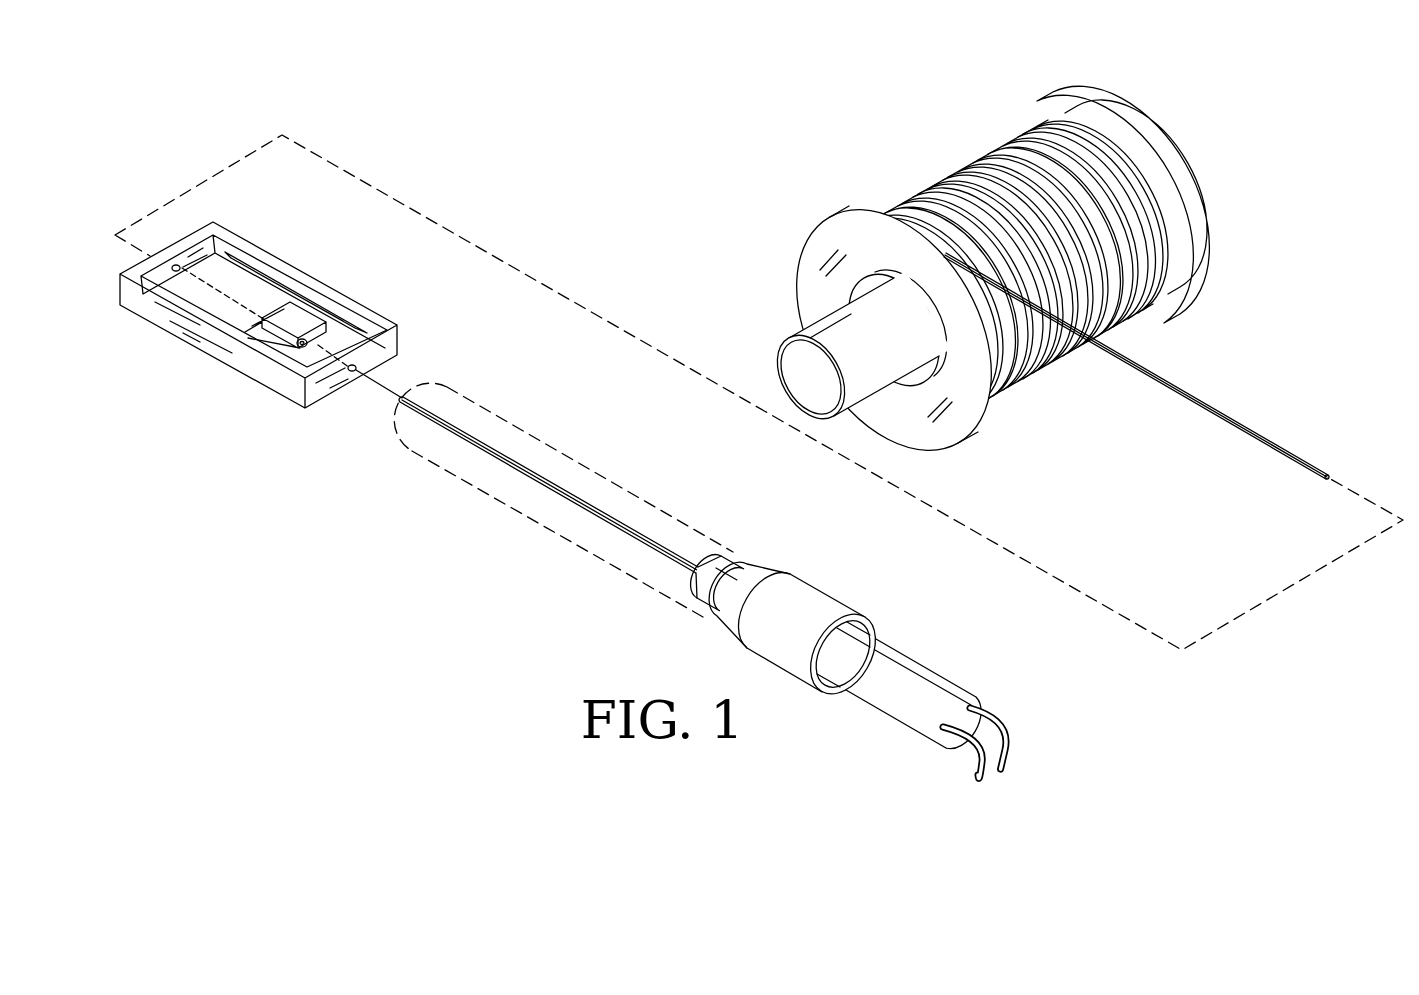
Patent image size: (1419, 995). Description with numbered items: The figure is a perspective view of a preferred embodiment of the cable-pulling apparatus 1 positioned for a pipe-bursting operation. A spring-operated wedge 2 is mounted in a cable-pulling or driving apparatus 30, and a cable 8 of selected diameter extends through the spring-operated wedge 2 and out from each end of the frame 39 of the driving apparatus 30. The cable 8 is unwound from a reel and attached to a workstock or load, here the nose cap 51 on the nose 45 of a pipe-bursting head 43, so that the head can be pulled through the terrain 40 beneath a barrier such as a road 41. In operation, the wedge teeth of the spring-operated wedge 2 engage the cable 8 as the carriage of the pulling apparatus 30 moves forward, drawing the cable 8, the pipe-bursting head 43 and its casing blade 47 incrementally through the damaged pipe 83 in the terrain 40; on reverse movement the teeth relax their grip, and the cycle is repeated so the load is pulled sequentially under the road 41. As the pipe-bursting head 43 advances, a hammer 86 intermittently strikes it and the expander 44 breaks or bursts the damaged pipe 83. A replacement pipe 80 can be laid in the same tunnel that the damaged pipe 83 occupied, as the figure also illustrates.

The cable-pulling apparatus 1 is at (668, 290).
The spring-operated wedge 2 is at (292, 330).
The cable 8 is at (392, 388).
The cable-pulling apparatus 30 is at (367, 300).
The frame 39 is at (278, 250).
The terrain 40 is at (517, 462).
The road 41 is at (1125, 110).
The pipe-bursting head 43 is at (829, 573).
The expander 44 is at (810, 603).
The nose 45 is at (727, 572).
The casing blade 47 is at (765, 560).
The nose cap 51 is at (707, 573).
The replacement pipe 80 is at (813, 693).
The damaged pipe 83 is at (612, 477).
The hammer 86 is at (917, 647).